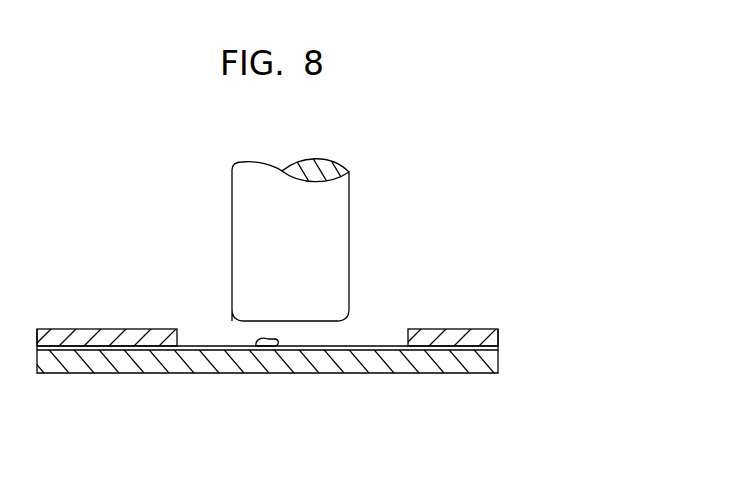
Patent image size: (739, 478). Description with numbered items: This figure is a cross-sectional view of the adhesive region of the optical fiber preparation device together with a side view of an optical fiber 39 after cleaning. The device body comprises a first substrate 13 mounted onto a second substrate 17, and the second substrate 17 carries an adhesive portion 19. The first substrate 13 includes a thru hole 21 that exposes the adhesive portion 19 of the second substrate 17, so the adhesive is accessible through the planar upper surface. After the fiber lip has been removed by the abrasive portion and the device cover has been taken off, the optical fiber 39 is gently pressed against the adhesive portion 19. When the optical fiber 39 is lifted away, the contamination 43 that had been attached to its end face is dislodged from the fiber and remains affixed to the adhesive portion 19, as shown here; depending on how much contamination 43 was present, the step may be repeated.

The optical fiber 39 is at (350, 200).
The first substrate 13 is at (498, 338).
The second substrate 17 is at (498, 363).
The thru hole 21 is at (176, 346).
The contamination 43 is at (260, 338).
The adhesive portion 19 is at (358, 347).